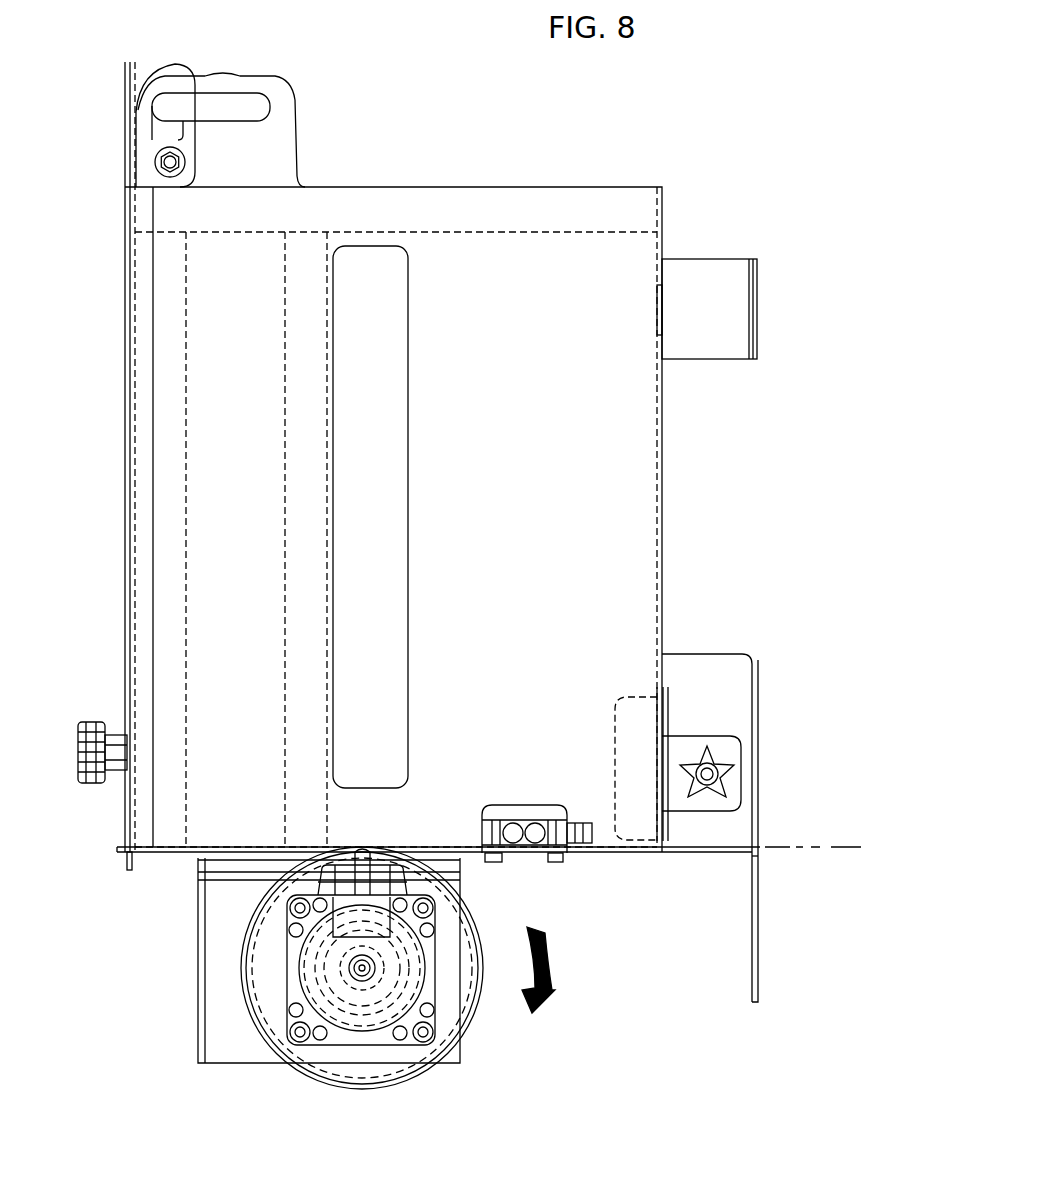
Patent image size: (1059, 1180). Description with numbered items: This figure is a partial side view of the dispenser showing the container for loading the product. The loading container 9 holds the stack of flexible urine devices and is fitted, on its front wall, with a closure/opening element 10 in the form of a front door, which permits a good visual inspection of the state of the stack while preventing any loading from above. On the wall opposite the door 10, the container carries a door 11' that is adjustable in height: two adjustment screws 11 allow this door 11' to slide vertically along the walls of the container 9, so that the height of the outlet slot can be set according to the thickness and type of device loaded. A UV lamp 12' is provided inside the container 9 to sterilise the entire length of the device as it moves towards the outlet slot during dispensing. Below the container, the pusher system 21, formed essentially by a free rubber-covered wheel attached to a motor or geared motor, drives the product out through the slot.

The loading container 9 is at (497, 212).
The closure/opening element 10 is at (125, 600).
The adjustment screws 11 is at (720, 774).
The door adjustable in height 11' is at (650, 818).
The UV lamp 12' is at (537, 793).
The pusher system 21 is at (482, 1050).